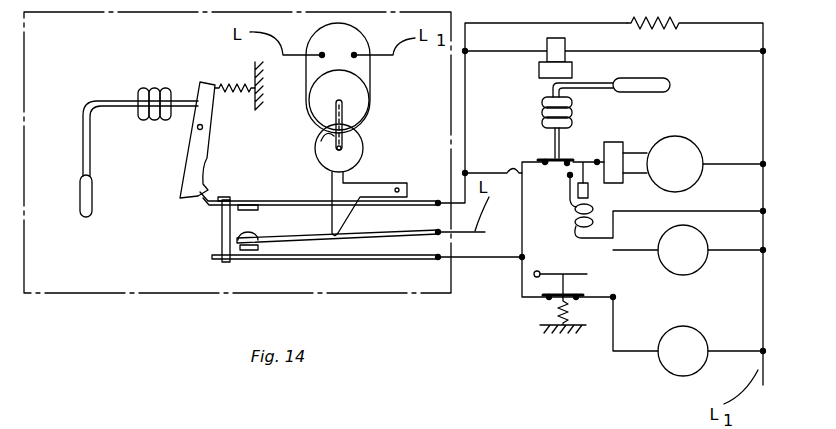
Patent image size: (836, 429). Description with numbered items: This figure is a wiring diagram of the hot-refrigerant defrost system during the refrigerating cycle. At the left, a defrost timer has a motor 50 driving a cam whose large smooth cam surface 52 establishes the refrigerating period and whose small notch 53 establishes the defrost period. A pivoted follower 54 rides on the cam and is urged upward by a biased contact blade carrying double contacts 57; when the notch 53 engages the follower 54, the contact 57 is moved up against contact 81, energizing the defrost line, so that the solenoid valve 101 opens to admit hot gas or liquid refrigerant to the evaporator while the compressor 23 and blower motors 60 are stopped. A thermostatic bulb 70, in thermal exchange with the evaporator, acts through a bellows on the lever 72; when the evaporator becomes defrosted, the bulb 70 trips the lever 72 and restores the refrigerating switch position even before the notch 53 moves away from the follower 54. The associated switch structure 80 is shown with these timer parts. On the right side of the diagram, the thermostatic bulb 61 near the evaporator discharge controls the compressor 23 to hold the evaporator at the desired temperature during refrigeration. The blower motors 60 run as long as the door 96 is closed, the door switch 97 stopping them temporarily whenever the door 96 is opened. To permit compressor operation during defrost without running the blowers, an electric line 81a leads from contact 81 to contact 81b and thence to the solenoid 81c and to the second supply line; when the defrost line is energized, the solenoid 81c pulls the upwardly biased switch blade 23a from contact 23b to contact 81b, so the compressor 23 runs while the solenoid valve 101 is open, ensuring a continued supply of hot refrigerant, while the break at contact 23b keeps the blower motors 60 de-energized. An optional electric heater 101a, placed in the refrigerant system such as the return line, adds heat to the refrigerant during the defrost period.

The thermostatic bulb 70 is at (85, 219).
The lever 72 is at (191, 171).
The contact 81 is at (248, 203).
The switch 80 is at (249, 258).
The double contacts 57 is at (256, 234).
The motor 50 is at (372, 79).
The smooth cam surface 52 is at (365, 143).
The notch 53 is at (330, 138).
The pivoted follower 54 is at (386, 188).
The solenoid valve 101 is at (548, 57).
The electric heater 101a is at (667, 31).
The thermostatic bulb 61 is at (652, 93).
The motor compressor 23 is at (704, 153).
The switch blade 23a is at (583, 160).
The contact 23b is at (576, 159).
The electric line 81a is at (508, 172).
The contact 81b is at (567, 178).
The solenoid 81c is at (573, 218).
The door 96 is at (551, 272).
The door switch 97 is at (550, 290).
The blower motors 60 is at (703, 333).